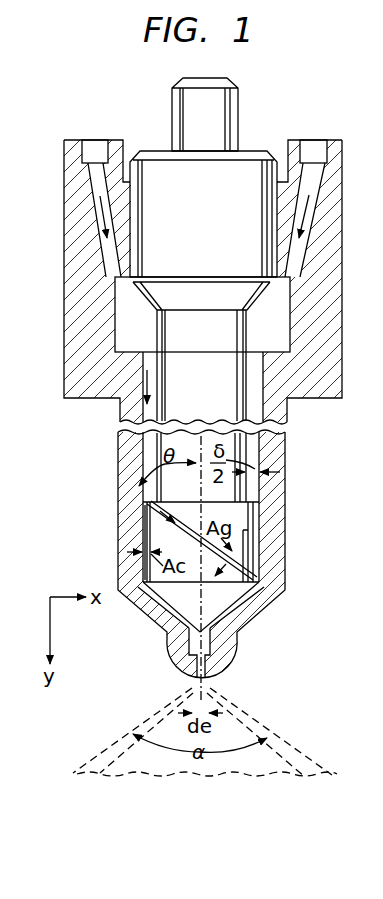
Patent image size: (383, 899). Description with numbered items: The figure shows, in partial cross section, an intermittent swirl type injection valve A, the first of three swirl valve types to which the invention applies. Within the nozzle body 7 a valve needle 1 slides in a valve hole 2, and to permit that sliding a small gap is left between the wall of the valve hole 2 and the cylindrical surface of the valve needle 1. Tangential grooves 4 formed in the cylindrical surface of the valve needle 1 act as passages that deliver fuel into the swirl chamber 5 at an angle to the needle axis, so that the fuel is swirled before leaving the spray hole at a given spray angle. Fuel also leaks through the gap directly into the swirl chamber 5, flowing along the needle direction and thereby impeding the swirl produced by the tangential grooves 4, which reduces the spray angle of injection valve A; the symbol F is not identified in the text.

The valve needle 1 is at (244, 530).
The valve hole 2 is at (145, 535).
The tangential grooves 4 is at (248, 570).
The swirl chamber 5 is at (232, 597).
The nozzle body 7 is at (277, 457).
The injection valve A is at (62, 344).
The fuel flow F is at (95, 159).